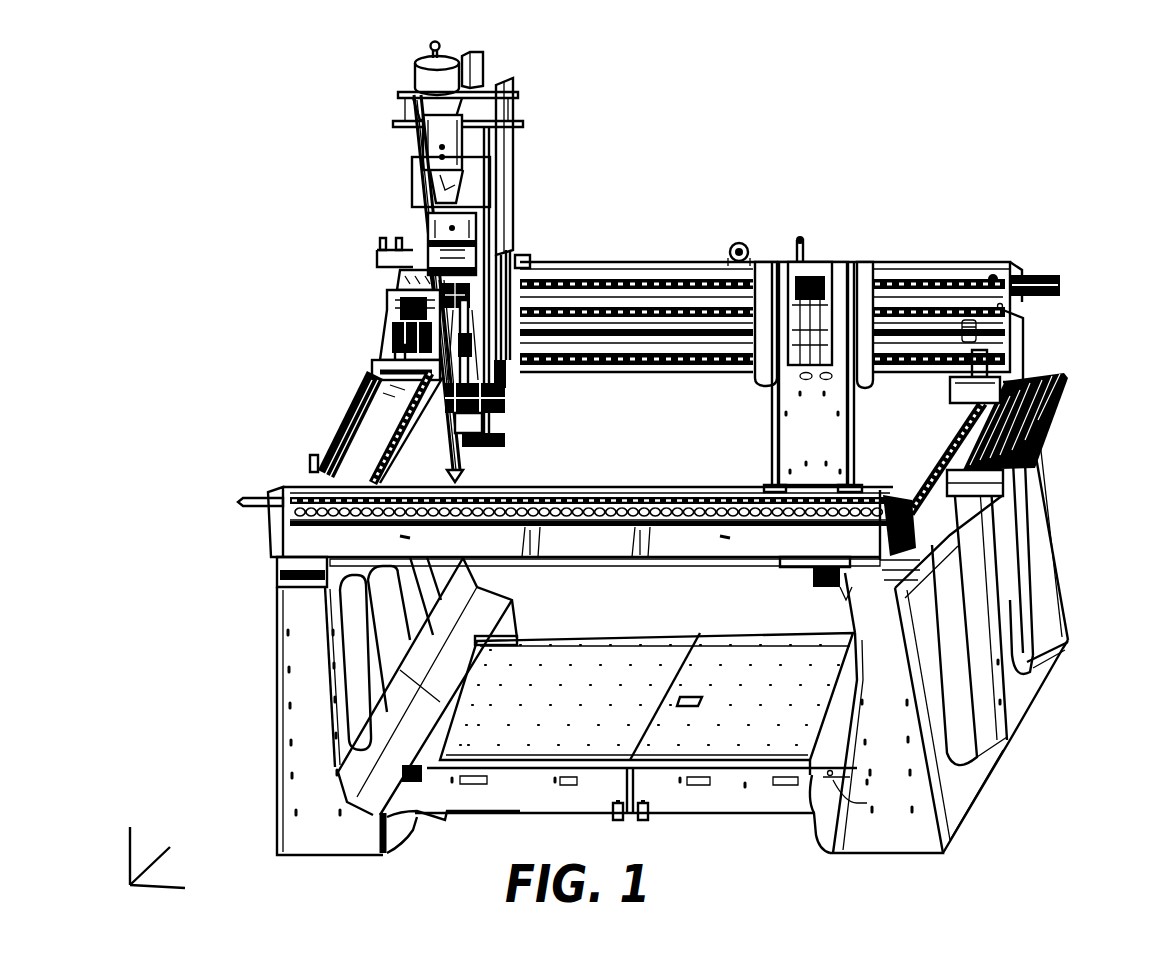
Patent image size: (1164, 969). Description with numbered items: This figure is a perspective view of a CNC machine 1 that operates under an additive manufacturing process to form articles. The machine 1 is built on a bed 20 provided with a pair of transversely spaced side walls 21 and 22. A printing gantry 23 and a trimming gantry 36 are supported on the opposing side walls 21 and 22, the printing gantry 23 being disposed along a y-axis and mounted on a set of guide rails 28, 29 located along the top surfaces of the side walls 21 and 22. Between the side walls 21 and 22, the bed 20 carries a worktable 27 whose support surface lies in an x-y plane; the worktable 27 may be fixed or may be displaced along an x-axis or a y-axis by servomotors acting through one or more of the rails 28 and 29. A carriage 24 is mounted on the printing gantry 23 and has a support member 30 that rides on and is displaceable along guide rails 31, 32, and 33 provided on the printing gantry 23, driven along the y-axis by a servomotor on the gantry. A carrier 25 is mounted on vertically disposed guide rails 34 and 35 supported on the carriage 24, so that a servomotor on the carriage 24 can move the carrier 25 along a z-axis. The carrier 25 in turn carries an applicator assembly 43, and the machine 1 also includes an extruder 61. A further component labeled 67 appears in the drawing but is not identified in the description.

The machine 1 is at (918, 154).
The bed 20 is at (548, 812).
The side wall 21 is at (280, 710).
The side wall 22 is at (1045, 506).
The printing gantry 23 is at (950, 302).
The carriage 24 is at (517, 223).
The carrier 25 is at (426, 239).
The worktable 27 is at (635, 697).
The guide rail 28 is at (347, 421).
The guide rail 29 is at (941, 426).
The support member 30 is at (523, 260).
The guide rail 31 is at (648, 285).
The guide rail 32 is at (606, 300).
The guide rail 33 is at (600, 362).
The vertically disposed guide rail 34 is at (390, 320).
The vertically disposed guide rail 35 is at (503, 377).
The trimming gantry 36 is at (312, 466).
The applicator assembly 43 is at (497, 447).
The extruder 61 is at (457, 263).
The mounting bracket 67 is at (830, 588).